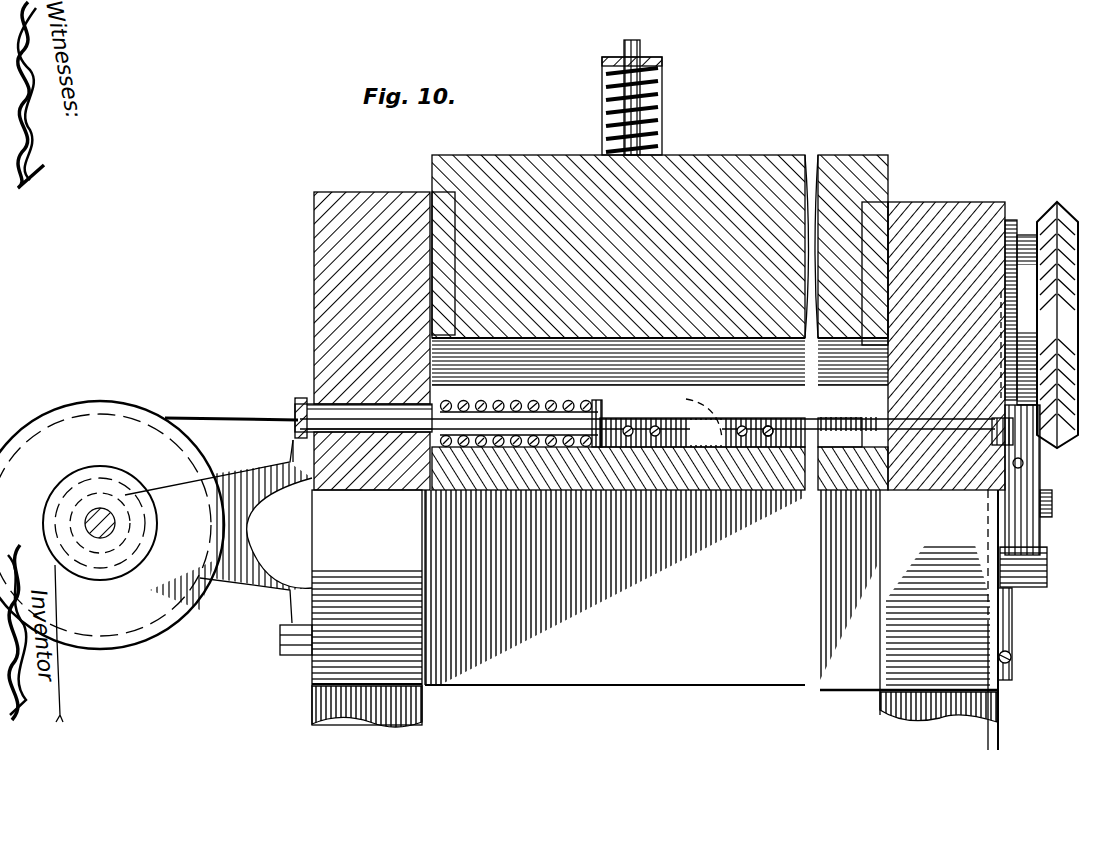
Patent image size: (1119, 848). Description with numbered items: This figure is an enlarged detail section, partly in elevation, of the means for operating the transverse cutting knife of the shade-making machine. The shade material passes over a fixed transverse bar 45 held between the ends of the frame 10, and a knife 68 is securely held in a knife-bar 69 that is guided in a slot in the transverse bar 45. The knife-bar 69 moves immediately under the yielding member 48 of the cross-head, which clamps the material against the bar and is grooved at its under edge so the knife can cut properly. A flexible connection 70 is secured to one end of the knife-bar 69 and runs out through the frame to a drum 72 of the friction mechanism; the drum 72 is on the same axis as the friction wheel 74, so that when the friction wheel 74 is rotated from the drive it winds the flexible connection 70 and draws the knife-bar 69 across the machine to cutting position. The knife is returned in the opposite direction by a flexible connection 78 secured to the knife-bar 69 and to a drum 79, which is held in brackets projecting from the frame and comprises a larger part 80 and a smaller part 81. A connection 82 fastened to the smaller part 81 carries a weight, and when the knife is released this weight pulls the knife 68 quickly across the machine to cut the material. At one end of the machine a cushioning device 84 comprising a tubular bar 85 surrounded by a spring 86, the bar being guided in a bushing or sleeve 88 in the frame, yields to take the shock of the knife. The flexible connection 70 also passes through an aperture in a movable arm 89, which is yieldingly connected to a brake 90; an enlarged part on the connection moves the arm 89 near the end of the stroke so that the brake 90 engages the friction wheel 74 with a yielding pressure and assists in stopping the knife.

The frame 10 is at (344, 459).
The transverse bar 45 is at (658, 688).
The yielding member 48 is at (748, 165).
The knife 68 is at (686, 399).
The knife-bar 69 is at (770, 425).
The flexible connection 70 is at (832, 425).
The drum 72 is at (1028, 243).
The friction wheel 74 is at (1066, 220).
The flexible connection 78 is at (262, 420).
The drum 79 is at (112, 509).
The drum part 80 is at (147, 412).
The drum part 81 is at (128, 492).
The connection 82 is at (62, 678).
The cushioning device 84 is at (295, 410).
The tubular bar 85 is at (520, 402).
The spring 86 is at (572, 402).
The bushing or sleeve 88 is at (305, 445).
The movable arm 89 is at (1028, 525).
The brake 90 is at (1027, 634).